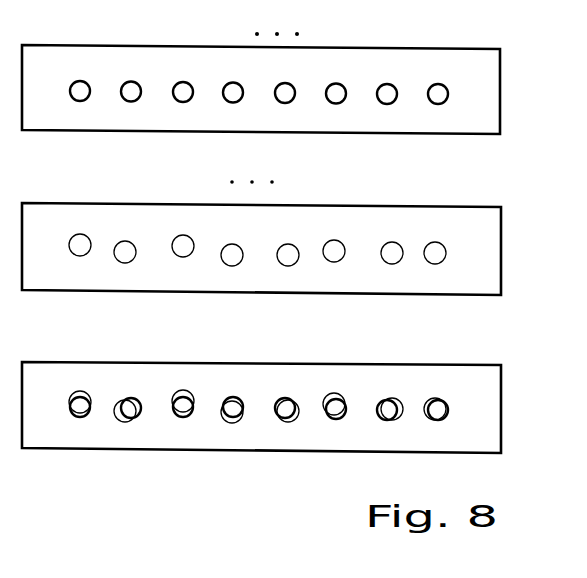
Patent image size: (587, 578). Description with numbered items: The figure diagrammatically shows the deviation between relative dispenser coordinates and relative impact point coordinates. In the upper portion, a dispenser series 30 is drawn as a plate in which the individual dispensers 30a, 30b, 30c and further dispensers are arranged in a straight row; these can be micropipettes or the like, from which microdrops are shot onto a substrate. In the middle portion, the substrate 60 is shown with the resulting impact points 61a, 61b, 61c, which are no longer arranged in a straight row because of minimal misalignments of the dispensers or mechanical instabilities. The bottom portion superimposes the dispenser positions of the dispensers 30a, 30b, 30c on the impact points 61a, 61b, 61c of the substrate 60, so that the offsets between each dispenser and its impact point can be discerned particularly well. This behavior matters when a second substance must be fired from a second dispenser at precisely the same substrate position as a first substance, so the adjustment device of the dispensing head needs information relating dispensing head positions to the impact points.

The dispenser series 30 is at (261, 89).
The dispenser 30a is at (72, 78).
The dispenser 30b is at (138, 78).
The dispenser 30c is at (184, 78).
The substrate 60 is at (261, 249).
The impact point 61a is at (80, 234).
The impact point 61b is at (127, 241).
The impact point 61c is at (190, 235).